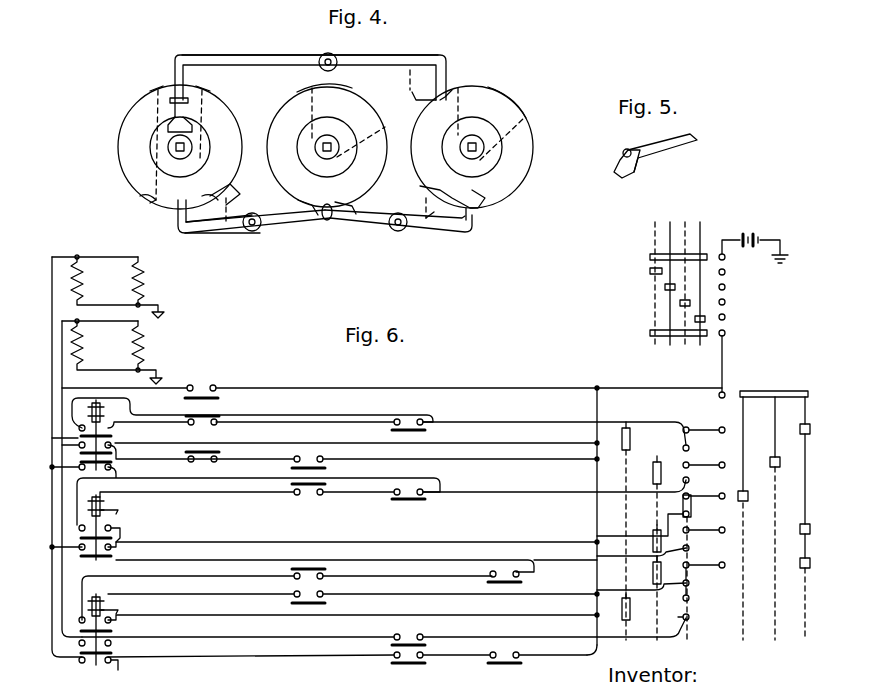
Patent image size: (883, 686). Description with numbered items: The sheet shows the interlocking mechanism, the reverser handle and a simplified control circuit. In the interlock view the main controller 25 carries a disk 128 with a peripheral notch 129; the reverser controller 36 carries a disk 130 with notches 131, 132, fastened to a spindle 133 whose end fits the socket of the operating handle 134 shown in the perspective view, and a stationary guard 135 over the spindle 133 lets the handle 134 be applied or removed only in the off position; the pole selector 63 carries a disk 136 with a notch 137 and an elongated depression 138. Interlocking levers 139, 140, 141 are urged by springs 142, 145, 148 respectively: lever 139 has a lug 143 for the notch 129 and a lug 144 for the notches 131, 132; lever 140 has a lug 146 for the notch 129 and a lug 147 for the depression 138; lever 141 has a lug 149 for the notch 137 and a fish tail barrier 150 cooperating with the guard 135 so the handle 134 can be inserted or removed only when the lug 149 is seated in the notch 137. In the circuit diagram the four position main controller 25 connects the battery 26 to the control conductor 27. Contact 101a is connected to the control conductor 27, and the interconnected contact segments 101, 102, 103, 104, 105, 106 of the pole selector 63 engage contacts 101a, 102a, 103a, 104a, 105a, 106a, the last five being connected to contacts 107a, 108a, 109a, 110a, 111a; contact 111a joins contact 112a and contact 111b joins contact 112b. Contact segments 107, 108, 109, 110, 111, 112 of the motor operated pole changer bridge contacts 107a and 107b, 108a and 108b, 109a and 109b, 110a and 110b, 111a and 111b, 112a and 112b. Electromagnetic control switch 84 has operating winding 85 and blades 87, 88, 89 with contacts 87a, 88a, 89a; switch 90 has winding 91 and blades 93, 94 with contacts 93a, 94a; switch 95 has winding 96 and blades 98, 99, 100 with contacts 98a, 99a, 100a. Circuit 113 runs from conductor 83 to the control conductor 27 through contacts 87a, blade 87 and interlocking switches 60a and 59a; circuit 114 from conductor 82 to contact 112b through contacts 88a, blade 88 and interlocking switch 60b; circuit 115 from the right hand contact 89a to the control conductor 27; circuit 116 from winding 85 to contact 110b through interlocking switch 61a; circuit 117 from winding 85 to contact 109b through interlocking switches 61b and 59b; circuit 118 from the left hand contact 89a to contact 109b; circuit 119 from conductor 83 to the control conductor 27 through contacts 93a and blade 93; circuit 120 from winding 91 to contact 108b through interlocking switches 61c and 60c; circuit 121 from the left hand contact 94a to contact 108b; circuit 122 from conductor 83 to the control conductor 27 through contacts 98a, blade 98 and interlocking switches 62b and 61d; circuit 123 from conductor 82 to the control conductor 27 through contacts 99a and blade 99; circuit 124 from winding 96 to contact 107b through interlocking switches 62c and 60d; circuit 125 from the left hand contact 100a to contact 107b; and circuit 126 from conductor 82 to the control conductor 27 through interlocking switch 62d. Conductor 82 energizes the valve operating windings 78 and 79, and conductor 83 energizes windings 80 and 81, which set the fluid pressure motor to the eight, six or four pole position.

In FIG. 4, the main controller 25 is at (302, 80).
In FIG. 6, the main controller 25 is at (669, 274).
In FIG. 6, the battery 26 is at (752, 234).
In FIG. 6, the control conductor 27 is at (640, 391).
In FIG. 4, the reverser controller 36 is at (156, 143).
In FIG. 4, the pole selector 63 is at (500, 132).
In FIG. 6, the pole selector 63 is at (746, 517).
In FIG. 6, the operating winding 78 is at (84, 354).
In FIG. 6, the operating winding 79 is at (145, 354).
In FIG. 6, the operating winding 80 is at (84, 290).
In FIG. 6, the operating winding 81 is at (145, 290).
In FIG. 6, the conductor 82 is at (62, 592).
In FIG. 6, the conductor 83 is at (52, 498).
In FIG. 6, the electromagnetic control switch 84 is at (122, 610).
In FIG. 6, the operating winding 85 is at (96, 594).
In FIG. 6, the switch blade 87 is at (121, 672).
In FIG. 6, the contacts 87a is at (104, 662).
In FIG. 6, the switch blade 88 is at (112, 645).
In FIG. 6, the contacts 88a is at (78, 658).
In FIG. 6, the switch blade 89 is at (80, 631).
In FIG. 6, the contacts 89a is at (112, 621).
In FIG. 6, the electromagnetic control switch 90 is at (121, 508).
In FIG. 6, the operating winding 91 is at (101, 501).
In FIG. 6, the switch blade 93 is at (80, 556).
In FIG. 6, the contacts 93a is at (112, 548).
In FIG. 6, the switch blade 94 is at (80, 538).
In FIG. 6, the contacts 94a is at (112, 528).
In FIG. 6, the electromagnetic control switch 95 is at (108, 434).
In FIG. 6, the operating winding 96 is at (101, 406).
In FIG. 6, the switch blade 98 is at (82, 470).
In FIG. 6, the contacts 98a is at (112, 469).
In FIG. 6, the switch blade 99 is at (80, 453).
In FIG. 6, the contacts 99a is at (112, 447).
In FIG. 6, the switch blade 100 is at (54, 436).
In FIG. 6, the contacts 100a is at (78, 427).
In FIG. 6, the contact segment 101 is at (805, 390).
In FIG. 6, the contact 101a is at (718, 394).
In FIG. 6, the contact segment 102 is at (798, 430).
In FIG. 6, the contact 102a is at (730, 421).
In FIG. 6, the contact segment 103 is at (770, 466).
In FIG. 6, the contact 103a is at (734, 457).
In FIG. 6, the contact segment 104 is at (748, 500).
In FIG. 6, the contact 104a is at (734, 488).
In FIG. 6, the contact segment 105 is at (798, 530).
In FIG. 6, the contact 105a is at (734, 522).
In FIG. 6, the contact segment 106 is at (798, 564).
In FIG. 6, the contact 106a is at (734, 557).
In FIG. 6, the contact segment 107 is at (630, 439).
In FIG. 6, the contact 107a is at (701, 421).
In FIG. 6, the contact 107b is at (690, 448).
In FIG. 6, the contact segment 108 is at (652, 473).
In FIG. 6, the contact 108a is at (689, 464).
In FIG. 6, the contact 108b is at (690, 480).
In FIG. 6, the contact segment 109 is at (682, 505).
In FIG. 6, the contact 109a is at (689, 495).
In FIG. 6, the contact 109b is at (690, 514).
In FIG. 6, the contact segment 110 is at (652, 541).
In FIG. 6, the contact 110a is at (689, 529).
In FIG. 6, the contact 110b is at (690, 548).
In FIG. 6, the contact segment 111 is at (652, 573).
In FIG. 6, the contact 111a is at (689, 564).
In FIG. 6, the contact 111b is at (690, 583).
In FIG. 6, the contact segment 112 is at (630, 609).
In FIG. 6, the contact 112a is at (689, 600).
In FIG. 6, the contact 112b is at (689, 619).
In FIG. 6, the circuit 113 is at (266, 656).
In FIG. 6, the circuit 114 is at (262, 637).
In FIG. 6, the circuit 115 is at (262, 615).
In FIG. 6, the circuit 116 is at (262, 594).
In FIG. 6, the circuit 117 is at (262, 576).
In FIG. 6, the circuit 118 is at (262, 560).
In FIG. 6, the circuit 119 is at (262, 542).
In FIG. 6, the circuit 120 is at (262, 492).
In FIG. 6, the circuit 121 is at (262, 479).
In FIG. 6, the circuit 122 is at (262, 459).
In FIG. 6, the circuit 123 is at (262, 443).
In FIG. 6, the circuit 124 is at (272, 424).
In FIG. 6, the circuit 125 is at (262, 415).
In FIG. 6, the circuit 126 is at (268, 388).
In FIG. 4, the disk 128 is at (378, 176).
In FIG. 4, the notch 129 is at (336, 206).
In FIG. 4, the disk 130 is at (119, 177).
In FIG. 4, the peripheral notch 131 is at (140, 200).
In FIG. 4, the peripheral notch 132 is at (232, 190).
In FIG. 4, the spindle 133 is at (185, 146).
In FIG. 5, the operating handle 134 is at (660, 150).
In FIG. 4, the stationary guard 135 is at (151, 147).
In FIG. 4, the disk 136 is at (532, 170).
In FIG. 4, the peripheral notch 137 is at (452, 92).
In FIG. 4, the peripheral elongated depression 138 is at (500, 205).
In FIG. 4, the interlocking lever 139 is at (276, 228).
In FIG. 4, the interlocking lever 140 is at (376, 229).
In FIG. 4, the interlocking lever 141 is at (286, 52).
In FIG. 4, the spring 142 is at (230, 204).
In FIG. 4, the lug 143 is at (327, 220).
In FIG. 4, the lug 144 is at (176, 222).
In FIG. 4, the spring 145 is at (437, 208).
In FIG. 4, the lug 146 is at (307, 199).
In FIG. 4, the lug 147 is at (474, 221).
In FIG. 4, the spring 148 is at (408, 80).
In FIG. 4, the lug 149 is at (424, 101).
In FIG. 4, the fish tail barrier 150 is at (183, 121).
In FIG. 6, the interlocking switch 59a is at (494, 664).
In FIG. 6, the interlocking switch 59b is at (522, 582).
In FIG. 6, the interlocking switch 60a is at (408, 664).
In FIG. 6, the interlocking switch 60b is at (408, 634).
In FIG. 6, the interlocking switch 60c is at (396, 500).
In FIG. 6, the interlocking switch 60d is at (392, 431).
In FIG. 6, the interlocking switch 61a is at (324, 603).
In FIG. 6, the interlocking switch 61b is at (303, 568).
In FIG. 6, the interlocking switch 61c is at (300, 495).
In FIG. 6, the interlocking switch 61d is at (306, 456).
In FIG. 6, the interlocking switch 62b is at (192, 462).
In FIG. 6, the interlocking switch 62c is at (192, 425).
In FIG. 6, the interlocking switch 62d is at (184, 399).